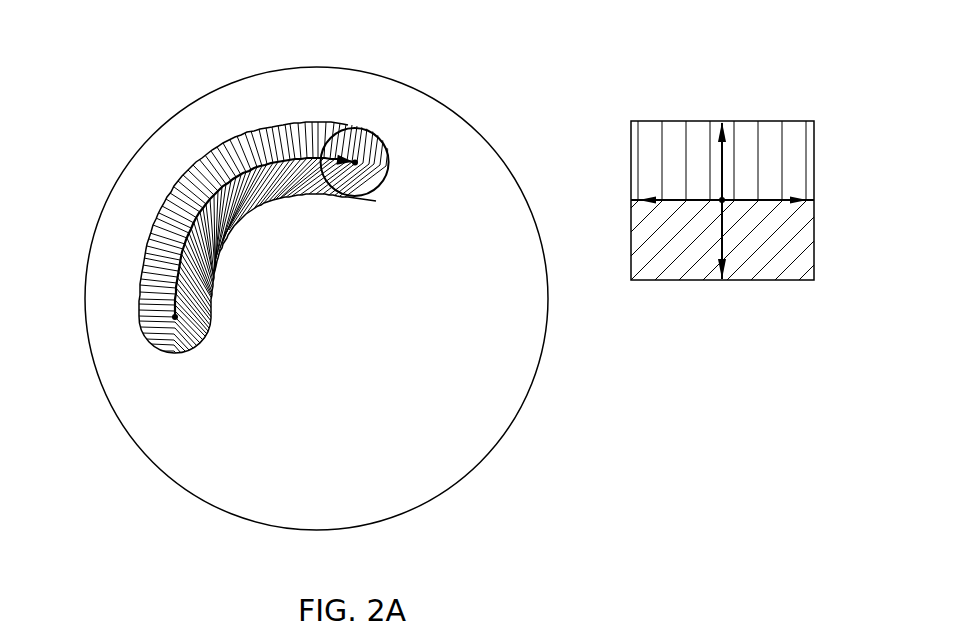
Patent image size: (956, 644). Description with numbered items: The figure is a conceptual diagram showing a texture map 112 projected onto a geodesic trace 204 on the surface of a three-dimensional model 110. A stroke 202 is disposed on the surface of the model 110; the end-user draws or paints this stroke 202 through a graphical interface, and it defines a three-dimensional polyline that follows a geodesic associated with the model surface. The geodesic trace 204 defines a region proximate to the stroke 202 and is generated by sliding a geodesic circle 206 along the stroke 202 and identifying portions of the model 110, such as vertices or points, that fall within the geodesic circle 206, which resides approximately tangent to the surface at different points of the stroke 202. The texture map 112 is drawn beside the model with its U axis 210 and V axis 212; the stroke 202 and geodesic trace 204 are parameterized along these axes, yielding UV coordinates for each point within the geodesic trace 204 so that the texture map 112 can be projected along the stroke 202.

The 3D model 110 is at (262, 73).
The stroke 202 is at (173, 247).
The geodesic trace 204 is at (307, 196).
The geodesic circle 206 is at (381, 144).
The U axis 210 is at (805, 196).
The texture map 112 is at (657, 282).
The V axis 212 is at (727, 282).